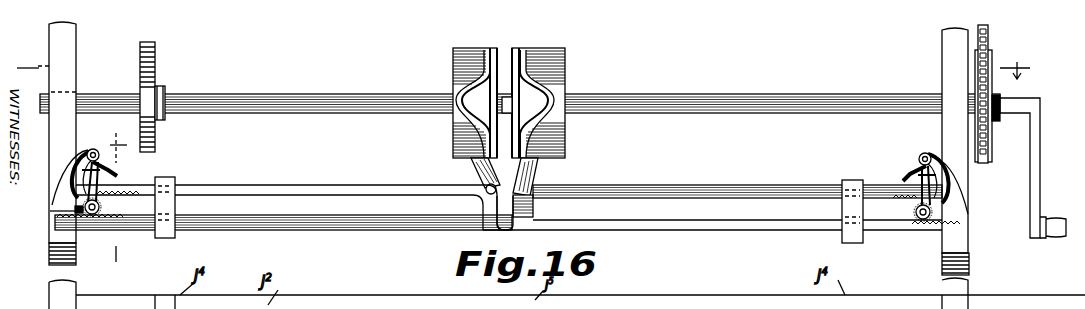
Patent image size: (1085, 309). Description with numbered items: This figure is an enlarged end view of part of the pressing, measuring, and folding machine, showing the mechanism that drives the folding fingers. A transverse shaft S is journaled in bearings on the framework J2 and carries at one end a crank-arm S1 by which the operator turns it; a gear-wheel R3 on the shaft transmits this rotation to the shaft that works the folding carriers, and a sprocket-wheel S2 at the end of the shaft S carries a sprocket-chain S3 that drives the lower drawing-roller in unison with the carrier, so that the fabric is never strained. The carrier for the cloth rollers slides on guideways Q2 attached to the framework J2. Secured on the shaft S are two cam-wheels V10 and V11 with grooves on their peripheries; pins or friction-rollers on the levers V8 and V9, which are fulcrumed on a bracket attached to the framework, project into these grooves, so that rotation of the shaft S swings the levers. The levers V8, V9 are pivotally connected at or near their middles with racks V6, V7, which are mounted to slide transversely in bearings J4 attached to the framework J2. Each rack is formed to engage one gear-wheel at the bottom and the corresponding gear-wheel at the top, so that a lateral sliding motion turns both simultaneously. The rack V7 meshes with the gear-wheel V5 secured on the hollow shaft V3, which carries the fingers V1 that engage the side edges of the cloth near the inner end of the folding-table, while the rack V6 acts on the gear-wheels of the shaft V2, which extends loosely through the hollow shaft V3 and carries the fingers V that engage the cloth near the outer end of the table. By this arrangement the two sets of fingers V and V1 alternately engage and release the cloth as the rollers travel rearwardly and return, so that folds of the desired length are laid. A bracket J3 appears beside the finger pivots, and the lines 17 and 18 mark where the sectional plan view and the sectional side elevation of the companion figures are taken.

The section line 17 is at (538, 67).
The section line 18 is at (118, 203).
The framework J2 is at (62, 42).
The bracket J3 is at (62, 183).
The bearings J4 is at (172, 182).
The gear-wheel R3 is at (156, 62).
The shaft S is at (690, 84).
The crank-arm S1 is at (1036, 179).
The sprocket-wheel S2 is at (992, 58).
The sprocket-chain S3 is at (990, 31).
The fingers V is at (116, 172).
The fingers V1 is at (80, 160).
The shafts V2 is at (101, 206).
The hollow shafts V3 is at (50, 212).
The gear-wheel V5 is at (918, 224).
The rack V6 is at (408, 231).
The rack V7 is at (378, 172).
The lever V8 is at (560, 172).
The lever V9 is at (482, 170).
The cam-wheel V10 is at (560, 68).
The cam-wheel V11 is at (460, 58).
The guideways Q2 is at (94, 149).